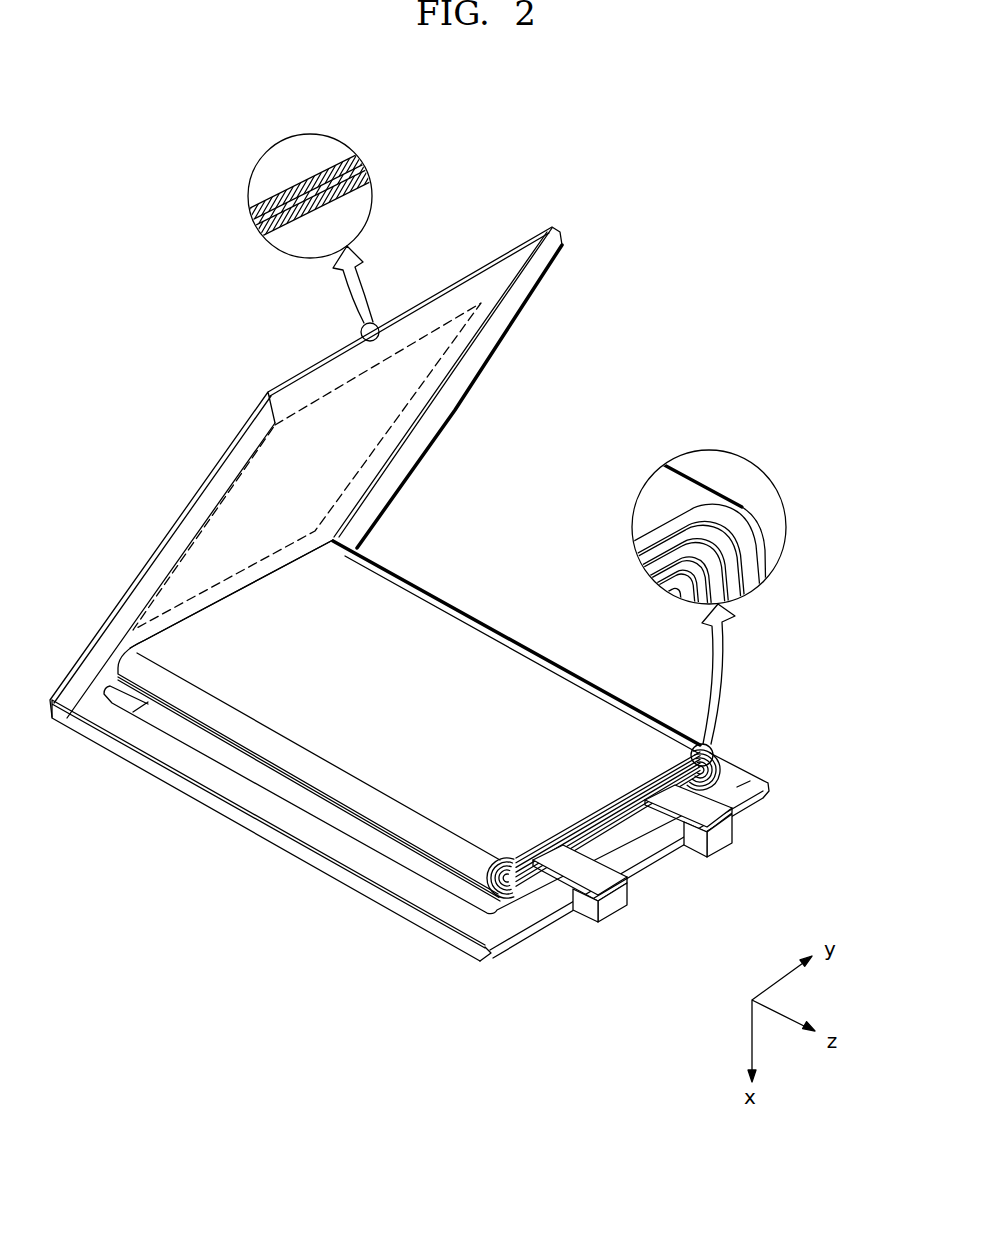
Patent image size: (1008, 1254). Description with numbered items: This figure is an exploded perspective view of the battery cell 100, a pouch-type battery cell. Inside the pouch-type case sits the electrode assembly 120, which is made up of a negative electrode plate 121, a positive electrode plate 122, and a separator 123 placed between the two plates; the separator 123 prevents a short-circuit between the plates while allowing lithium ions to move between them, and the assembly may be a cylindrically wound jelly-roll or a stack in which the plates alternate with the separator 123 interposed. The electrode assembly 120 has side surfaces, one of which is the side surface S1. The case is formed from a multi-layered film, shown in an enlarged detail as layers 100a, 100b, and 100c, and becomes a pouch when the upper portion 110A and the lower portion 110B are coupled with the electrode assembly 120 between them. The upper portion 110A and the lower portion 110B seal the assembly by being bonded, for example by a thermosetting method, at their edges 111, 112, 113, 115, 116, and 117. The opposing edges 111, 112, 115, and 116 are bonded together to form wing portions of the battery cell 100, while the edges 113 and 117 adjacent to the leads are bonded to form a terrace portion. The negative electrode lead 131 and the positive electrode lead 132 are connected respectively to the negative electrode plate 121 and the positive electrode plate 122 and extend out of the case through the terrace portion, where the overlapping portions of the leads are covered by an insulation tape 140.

The battery cell 100 is at (688, 231).
The metal layer of pouch 100a is at (360, 170).
The outer insulating layer of pouch 100b is at (357, 156).
The inner sealing layer of pouch 100c is at (364, 181).
The upper portion 110A is at (188, 497).
The lower portion 110B is at (551, 936).
The edge 111 is at (133, 600).
The edge 112 is at (548, 268).
The edge 113 is at (438, 310).
The edge 115 is at (330, 872).
The edge 116 is at (771, 796).
The edge 117 is at (649, 845).
The electrode assembly 120 is at (531, 644).
The negative electrode plate 121 is at (743, 522).
The positive electrode plate 122 is at (742, 574).
The separator 123 is at (764, 549).
The negative electrode lead 131 is at (613, 903).
The positive electrode lead 132 is at (735, 843).
The insulation tape 140 is at (567, 870).
The side surface S1 is at (513, 955).